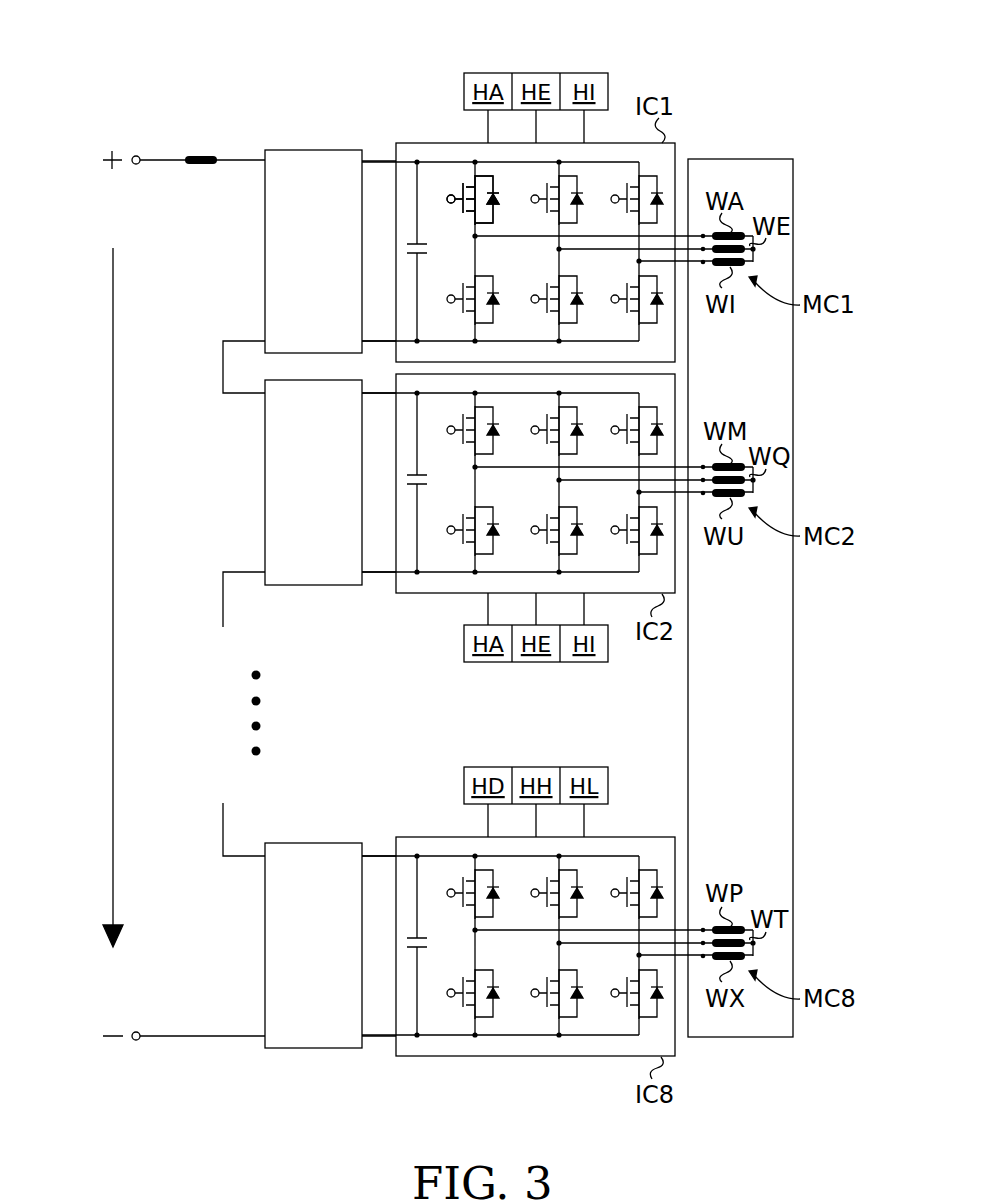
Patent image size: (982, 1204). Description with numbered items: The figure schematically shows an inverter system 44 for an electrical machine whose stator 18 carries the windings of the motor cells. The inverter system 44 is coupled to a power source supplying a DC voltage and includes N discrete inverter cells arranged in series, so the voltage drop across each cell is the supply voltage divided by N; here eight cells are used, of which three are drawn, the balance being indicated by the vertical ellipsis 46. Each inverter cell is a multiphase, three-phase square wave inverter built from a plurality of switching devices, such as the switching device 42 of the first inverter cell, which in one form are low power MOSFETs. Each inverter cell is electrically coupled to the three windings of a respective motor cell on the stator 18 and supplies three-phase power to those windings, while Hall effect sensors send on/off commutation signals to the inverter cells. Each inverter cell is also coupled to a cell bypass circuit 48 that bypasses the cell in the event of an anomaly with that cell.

The stator 18 is at (793, 710).
The switching device 42 is at (462, 185).
The inverter system 44 is at (158, 106).
The vertical ellipsis 46 is at (266, 668).
The cell bypass circuit 48 is at (313, 599).